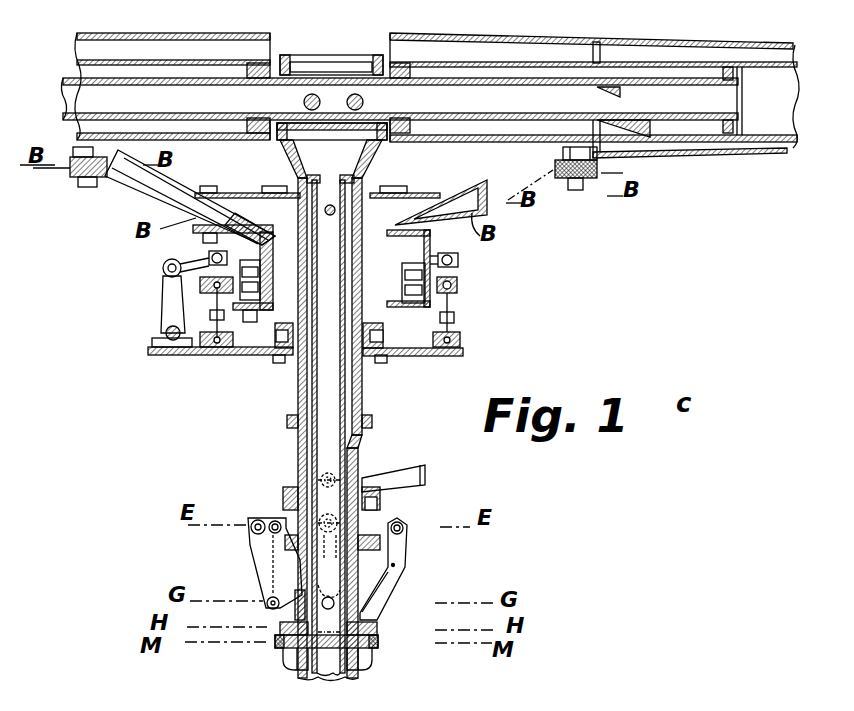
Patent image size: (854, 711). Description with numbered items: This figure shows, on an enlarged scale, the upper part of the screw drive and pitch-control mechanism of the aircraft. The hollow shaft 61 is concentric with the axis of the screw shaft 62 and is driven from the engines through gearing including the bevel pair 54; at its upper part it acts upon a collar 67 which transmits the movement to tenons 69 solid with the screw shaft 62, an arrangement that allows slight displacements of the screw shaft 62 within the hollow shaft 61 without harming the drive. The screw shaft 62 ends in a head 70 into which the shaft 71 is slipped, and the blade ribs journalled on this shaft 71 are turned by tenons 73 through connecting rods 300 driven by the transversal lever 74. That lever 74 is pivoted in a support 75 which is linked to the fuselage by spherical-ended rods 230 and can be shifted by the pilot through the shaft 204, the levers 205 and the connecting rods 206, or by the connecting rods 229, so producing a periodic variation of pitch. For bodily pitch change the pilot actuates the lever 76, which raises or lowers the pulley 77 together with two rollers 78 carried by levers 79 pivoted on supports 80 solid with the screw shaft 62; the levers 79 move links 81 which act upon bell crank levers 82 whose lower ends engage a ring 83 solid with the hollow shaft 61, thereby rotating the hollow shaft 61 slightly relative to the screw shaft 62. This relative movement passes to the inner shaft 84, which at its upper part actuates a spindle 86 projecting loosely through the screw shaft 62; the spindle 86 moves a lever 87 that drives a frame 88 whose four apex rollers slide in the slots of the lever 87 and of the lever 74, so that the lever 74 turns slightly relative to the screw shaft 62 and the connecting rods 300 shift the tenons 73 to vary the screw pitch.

The head 70 is at (372, 50).
The shaft 71 is at (693, 107).
The tenons 73 is at (563, 155).
The connecting rods 300 is at (597, 178).
The transversal lever 74 is at (157, 197).
The frame 88 is at (222, 195).
The spindle 86 is at (336, 207).
The lever 87 is at (402, 220).
The connecting rods 229 is at (167, 275).
The connecting rods 206 is at (168, 297).
The lever 205 is at (166, 326).
The shaft 204 is at (162, 356).
The inner shaft 84 is at (328, 380).
The screw shaft 62 is at (363, 383).
The support 75 is at (455, 313).
The spherical-ended rods 230 is at (462, 340).
The lever 76 is at (398, 472).
The pulley 77 is at (380, 503).
The rollers 78 is at (322, 497).
The levers 79 is at (320, 520).
The links 81 is at (268, 551).
The supports 80 is at (406, 547).
The ring 83 is at (382, 610).
The bell crank levers 82 is at (280, 610).
The collar 67 is at (378, 642).
The hollow shaft 61 is at (372, 660).
The tenons 69 is at (275, 673).
The bevel pair 54 is at (556, 703).